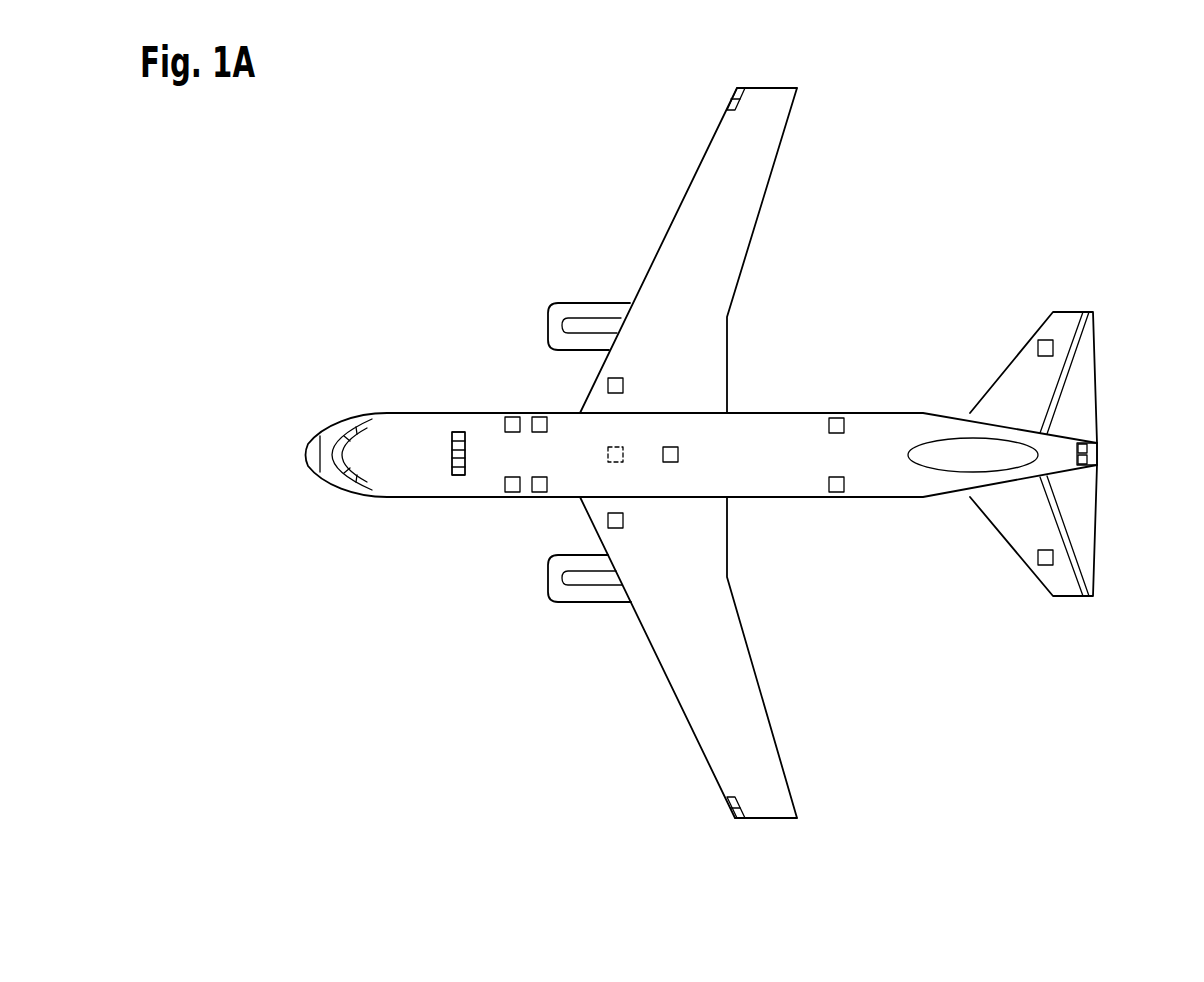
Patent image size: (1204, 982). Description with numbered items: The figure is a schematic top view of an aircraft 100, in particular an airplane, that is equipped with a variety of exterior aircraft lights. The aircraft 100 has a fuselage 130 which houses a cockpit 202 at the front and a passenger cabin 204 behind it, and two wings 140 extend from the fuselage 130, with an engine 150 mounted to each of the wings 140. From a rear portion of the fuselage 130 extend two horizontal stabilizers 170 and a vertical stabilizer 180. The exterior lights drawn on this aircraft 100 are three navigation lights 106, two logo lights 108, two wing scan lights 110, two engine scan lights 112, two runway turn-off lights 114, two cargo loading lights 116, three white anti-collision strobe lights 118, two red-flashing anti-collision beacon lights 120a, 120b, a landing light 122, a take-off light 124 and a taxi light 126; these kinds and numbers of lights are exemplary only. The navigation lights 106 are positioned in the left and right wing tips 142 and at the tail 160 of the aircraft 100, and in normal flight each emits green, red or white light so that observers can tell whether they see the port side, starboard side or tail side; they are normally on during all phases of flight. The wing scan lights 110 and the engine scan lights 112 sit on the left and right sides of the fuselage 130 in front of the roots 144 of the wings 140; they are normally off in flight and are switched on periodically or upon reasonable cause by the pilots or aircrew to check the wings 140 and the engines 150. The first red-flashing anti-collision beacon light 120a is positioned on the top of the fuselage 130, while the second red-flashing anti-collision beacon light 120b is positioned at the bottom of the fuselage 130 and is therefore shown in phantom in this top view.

The aircraft 100 is at (714, 454).
The navigation light 106 is at (736, 95).
The logo light 108 is at (1038, 348).
The wing scan light 110 is at (505, 424).
The engine scan light 112 is at (538, 417).
The runway turn-off light 114 is at (623, 386).
The cargo loading light 116 is at (838, 418).
The white anti-collision strobe light 118 is at (730, 105).
The first red-flashing anti-collision beacon light 120a is at (670, 462).
The second red-flashing anti-collision beacon light 120b is at (616, 447).
The landing light 122 is at (450, 470).
The take-off light 124 is at (450, 436).
The taxi light 126 is at (450, 453).
The fuselage 130 is at (903, 483).
The wing 140 is at (782, 182).
The wing tip 142 is at (782, 82).
The wing root 144 is at (577, 387).
The engine 150 is at (580, 299).
The tail 160 is at (1074, 469).
The horizontal stabilizer 170 is at (1104, 324).
The vertical stabilizer 180 is at (937, 455).
The cockpit 202 is at (336, 420).
The passenger cabin 204 is at (797, 432).